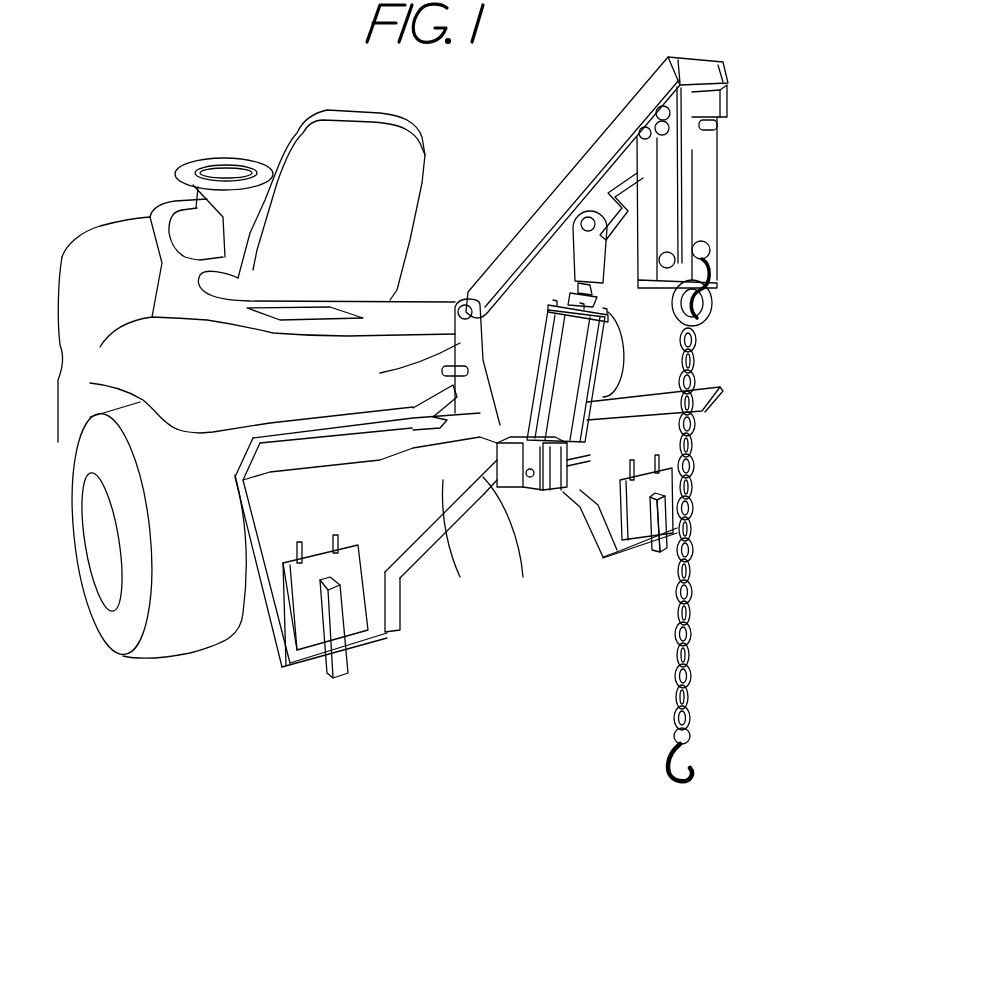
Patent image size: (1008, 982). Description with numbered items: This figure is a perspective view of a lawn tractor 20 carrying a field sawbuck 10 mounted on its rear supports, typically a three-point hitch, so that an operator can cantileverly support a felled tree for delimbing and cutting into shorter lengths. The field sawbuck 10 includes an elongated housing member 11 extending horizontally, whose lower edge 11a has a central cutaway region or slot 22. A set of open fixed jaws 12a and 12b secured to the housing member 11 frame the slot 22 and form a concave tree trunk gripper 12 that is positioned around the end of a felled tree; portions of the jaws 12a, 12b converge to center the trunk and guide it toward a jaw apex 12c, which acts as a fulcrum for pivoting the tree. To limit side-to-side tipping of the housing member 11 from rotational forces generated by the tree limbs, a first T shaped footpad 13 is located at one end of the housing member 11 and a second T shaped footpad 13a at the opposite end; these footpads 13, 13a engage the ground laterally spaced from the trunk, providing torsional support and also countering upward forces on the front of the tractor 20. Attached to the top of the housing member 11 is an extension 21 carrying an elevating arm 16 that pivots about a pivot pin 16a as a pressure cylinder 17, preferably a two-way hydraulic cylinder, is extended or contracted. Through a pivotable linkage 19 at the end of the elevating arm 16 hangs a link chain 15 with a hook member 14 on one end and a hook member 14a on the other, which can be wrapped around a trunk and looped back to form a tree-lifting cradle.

The field sawbuck 10 is at (540, 153).
The housing member 11 is at (384, 516).
The lower edge 11a is at (290, 660).
The tree trunk gripper 12 is at (422, 548).
The first jaw 12a is at (420, 570).
The second jaw 12b is at (580, 510).
The jaw apex 12c is at (487, 490).
The first T shaped footpad 13 is at (343, 677).
The second T shaped footpad 13a is at (660, 548).
The hook member 14 is at (677, 787).
The hook member 14a is at (715, 332).
The link chain 15 is at (693, 623).
The elevating arm 16 is at (625, 120).
The pivot pin 16a is at (463, 297).
The pressure cylinder 17 is at (540, 492).
The pivotable linkage 19 is at (703, 210).
The lawn tractor 20 is at (95, 247).
The extension 21 is at (460, 345).
The slot 22 is at (508, 561).